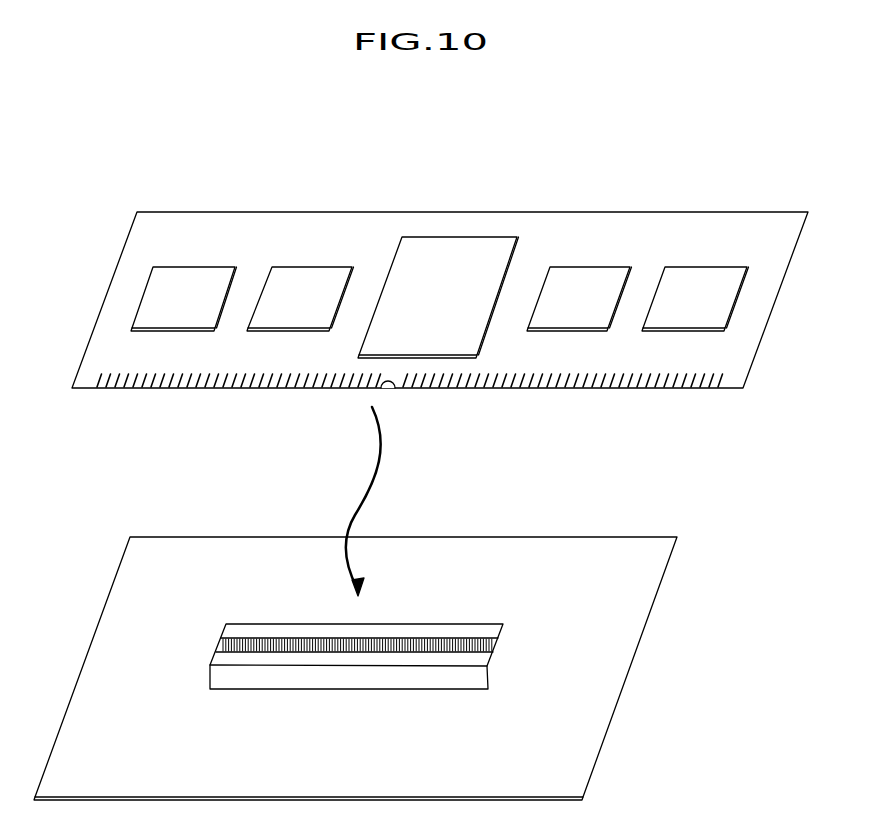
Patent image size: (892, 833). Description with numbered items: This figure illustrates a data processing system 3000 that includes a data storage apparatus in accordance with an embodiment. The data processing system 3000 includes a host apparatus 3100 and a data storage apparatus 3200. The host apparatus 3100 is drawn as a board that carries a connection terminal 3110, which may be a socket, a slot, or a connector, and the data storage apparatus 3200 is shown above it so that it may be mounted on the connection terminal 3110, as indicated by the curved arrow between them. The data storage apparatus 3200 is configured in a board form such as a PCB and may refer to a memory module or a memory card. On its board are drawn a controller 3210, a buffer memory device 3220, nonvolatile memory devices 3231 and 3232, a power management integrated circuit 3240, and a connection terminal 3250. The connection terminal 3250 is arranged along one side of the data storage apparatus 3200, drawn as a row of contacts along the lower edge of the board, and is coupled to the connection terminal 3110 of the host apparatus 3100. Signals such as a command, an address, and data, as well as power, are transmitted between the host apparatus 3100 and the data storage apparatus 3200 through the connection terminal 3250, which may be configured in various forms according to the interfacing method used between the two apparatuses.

The data processing system 3000 is at (258, 169).
The data storage apparatus 3200 is at (440, 325).
The controller 3210 is at (438, 297).
The buffer memory device 3220 is at (300, 299).
The nonvolatile memory device 3231 is at (579, 299).
The nonvolatile memory device 3232 is at (695, 299).
The power management integrated circuit 3240 is at (184, 299).
The connection terminal 3250 is at (115, 389).
The host apparatus 3100 is at (355, 668).
The connection terminal 3110 is at (527, 616).